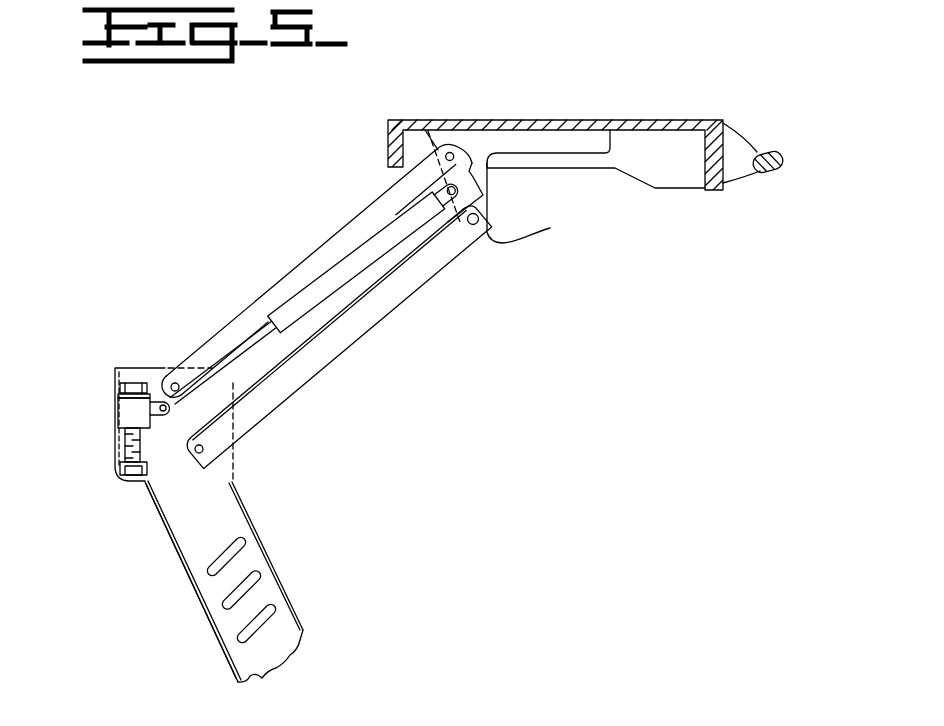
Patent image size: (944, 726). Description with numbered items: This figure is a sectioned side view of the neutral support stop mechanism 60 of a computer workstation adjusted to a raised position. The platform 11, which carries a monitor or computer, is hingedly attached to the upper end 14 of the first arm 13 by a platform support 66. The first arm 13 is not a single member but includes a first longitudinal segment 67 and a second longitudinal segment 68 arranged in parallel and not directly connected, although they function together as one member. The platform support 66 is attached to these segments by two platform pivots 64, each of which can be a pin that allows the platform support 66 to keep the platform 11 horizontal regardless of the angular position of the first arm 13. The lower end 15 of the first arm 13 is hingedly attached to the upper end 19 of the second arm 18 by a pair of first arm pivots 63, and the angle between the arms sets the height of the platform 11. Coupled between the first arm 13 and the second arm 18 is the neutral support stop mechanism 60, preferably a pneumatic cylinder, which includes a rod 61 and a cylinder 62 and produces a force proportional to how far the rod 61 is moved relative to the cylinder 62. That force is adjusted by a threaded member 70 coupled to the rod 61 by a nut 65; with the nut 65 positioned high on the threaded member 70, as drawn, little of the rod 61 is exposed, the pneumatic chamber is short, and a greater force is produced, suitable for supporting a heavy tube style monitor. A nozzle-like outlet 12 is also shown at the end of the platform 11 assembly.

The platform 11 is at (546, 120).
The nozzle 12 is at (771, 152).
The first arm 13 is at (317, 250).
The upper end 14 is at (393, 187).
The lower end 15 is at (186, 367).
The second arm 18 is at (192, 582).
The upper end 19 is at (153, 498).
The neutral support stop mechanism 60 is at (294, 290).
The rod 61 is at (263, 325).
The cylinder 62 is at (355, 250).
The first arm pivots 63 is at (172, 385).
The platform pivots 64 is at (449, 152).
The nut 65 is at (118, 408).
The platform support 66 is at (572, 154).
The first longitudinal segment 67 is at (278, 286).
The second longitudinal segment 68 is at (307, 383).
The threaded member 70 is at (127, 448).